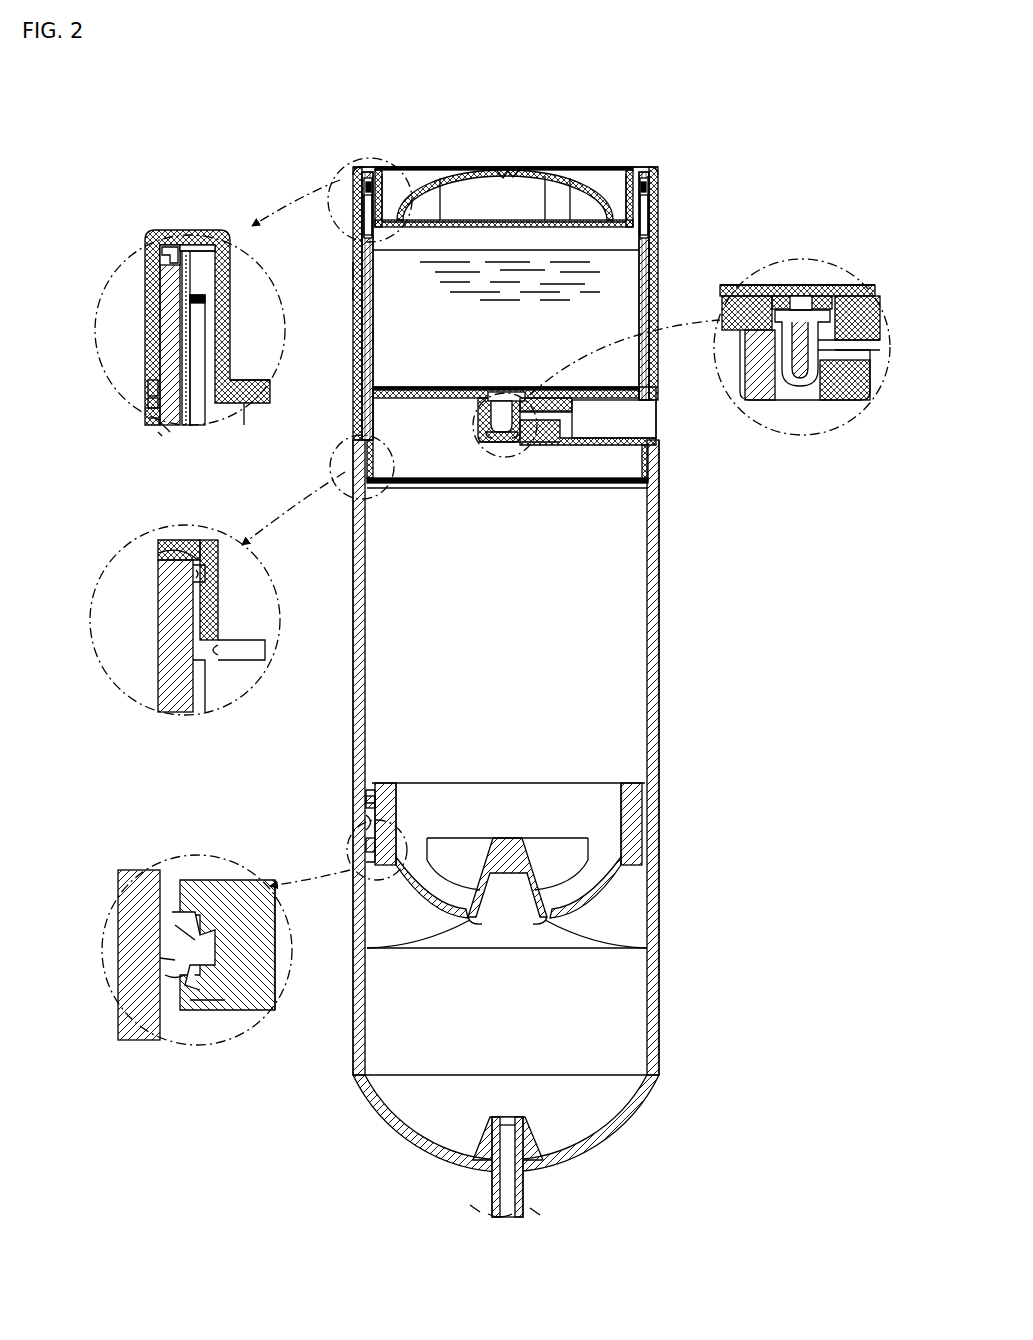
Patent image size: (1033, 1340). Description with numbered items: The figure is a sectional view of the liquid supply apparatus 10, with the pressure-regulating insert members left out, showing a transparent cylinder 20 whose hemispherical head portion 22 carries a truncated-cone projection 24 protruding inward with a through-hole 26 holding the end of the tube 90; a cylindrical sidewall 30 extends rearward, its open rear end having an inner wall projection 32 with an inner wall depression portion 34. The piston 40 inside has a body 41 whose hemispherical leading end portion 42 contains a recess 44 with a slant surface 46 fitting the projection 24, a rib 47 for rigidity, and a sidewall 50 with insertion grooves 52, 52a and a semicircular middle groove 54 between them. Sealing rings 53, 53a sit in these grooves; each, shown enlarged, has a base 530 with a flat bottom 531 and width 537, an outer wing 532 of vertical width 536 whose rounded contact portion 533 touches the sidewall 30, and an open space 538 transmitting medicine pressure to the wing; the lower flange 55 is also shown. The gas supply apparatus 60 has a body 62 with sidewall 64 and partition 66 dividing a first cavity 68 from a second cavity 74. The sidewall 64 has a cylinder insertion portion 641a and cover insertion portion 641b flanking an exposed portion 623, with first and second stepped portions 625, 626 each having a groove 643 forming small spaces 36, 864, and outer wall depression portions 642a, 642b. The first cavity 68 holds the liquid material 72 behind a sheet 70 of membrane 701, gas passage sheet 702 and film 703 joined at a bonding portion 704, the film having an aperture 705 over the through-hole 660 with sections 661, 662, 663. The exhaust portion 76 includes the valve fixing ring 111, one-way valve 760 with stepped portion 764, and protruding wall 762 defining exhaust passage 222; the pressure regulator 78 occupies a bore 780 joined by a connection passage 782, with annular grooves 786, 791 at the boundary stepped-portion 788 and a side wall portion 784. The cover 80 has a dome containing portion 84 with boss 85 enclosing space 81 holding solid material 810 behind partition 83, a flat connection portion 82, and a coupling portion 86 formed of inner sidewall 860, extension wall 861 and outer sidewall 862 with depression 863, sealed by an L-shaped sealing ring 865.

The liquid supply apparatus 10 is at (790, 142).
The cylinder 20 is at (700, 683).
The head portion 22 is at (590, 1147).
The projection 24 is at (540, 1122).
The through-hole 26 is at (540, 1075).
The sidewall 30 is at (660, 728).
The inner wall projection 32 is at (205, 668).
The inner wall depression portion 34 is at (180, 590).
The small space 36 is at (196, 576).
The piston 40 is at (418, 772).
The piston body 41 is at (385, 785).
The leading end portion 42 is at (600, 895).
The recess 44 is at (510, 925).
The slant surface 46 is at (367, 947).
The rib 47 is at (560, 840).
The sidewall 50 is at (660, 838).
The insertion groove 52 is at (368, 852).
The rear insertion groove 52a is at (368, 795).
The sealing ring 53 is at (366, 845).
The rear sealing ring 53a is at (366, 810).
The middle groove 54 is at (368, 822).
The lower flange 55 is at (212, 1010).
The gas supply apparatus 60 is at (697, 208).
The body 62 is at (665, 272).
The sidewall 64 is at (353, 292).
The partition 66 is at (373, 392).
The first cavity 68 is at (639, 240).
The gas-permeable sheet 70 is at (352, 264).
The liquid material 72 is at (373, 336).
The second cavity 74 is at (590, 484).
The exhaust portion 76 is at (478, 446).
The pressure regulator 78 is at (660, 442).
The cover 80 is at (395, 167).
The space 81 is at (611, 212).
The flat connection portion 82 is at (624, 176).
The partition 83 is at (546, 205).
The containing portion 84 is at (590, 200).
The boss 85 is at (504, 171).
The coupling portion 86 is at (366, 176).
The tube 90 is at (525, 1195).
The valve fixing ring 111 is at (845, 296).
The exhaust passage 222 is at (830, 400).
The base 530 is at (192, 1012).
The flat bottom 531 is at (230, 880).
The outer wing 532 is at (165, 925).
The contact portion 533 is at (165, 960).
The vertical width 536 is at (170, 905).
The width 537 is at (272, 1000).
The space 538 is at (175, 976).
The exposed portion 623 is at (363, 318).
The first stepped portion 625 is at (160, 548).
The second stepped portion 626 is at (158, 420).
The cylinder insertion portion 641a is at (218, 580).
The cover insertion portion 641b is at (150, 410).
The outer wall depression portion 642a is at (220, 648).
The outer wall depression portion 642b is at (182, 230).
The groove 643 is at (160, 432).
The through-hole 660 is at (820, 296).
The first section 661 is at (758, 286).
The second section 662 is at (764, 400).
The third section 663 is at (786, 400).
The membrane 701 is at (192, 342).
The gas passage sheet 702 is at (186, 318).
The film 703 is at (185, 300).
The bonding portion 704 is at (205, 292).
The aperture 705 is at (800, 296).
The one-way valve 760 is at (478, 420).
The protruding wall 762 is at (490, 455).
The stepped portion 764 is at (848, 386).
The bore 780 is at (632, 422).
The connection passage 782 is at (570, 445).
The side wall portion 784 is at (648, 470).
The annular groove 786 is at (694, 380).
The boundary stepped-portion 788 is at (648, 485).
The annular groove 791 is at (660, 406).
The solid material 810 is at (452, 192).
The inner sidewall 860 is at (244, 405).
The extension wall 861 is at (652, 190).
The outer sidewall 862 is at (150, 385).
The inner wall depression portion 863 is at (148, 403).
The small space 864 is at (178, 418).
The sealing ring 865 is at (165, 246).